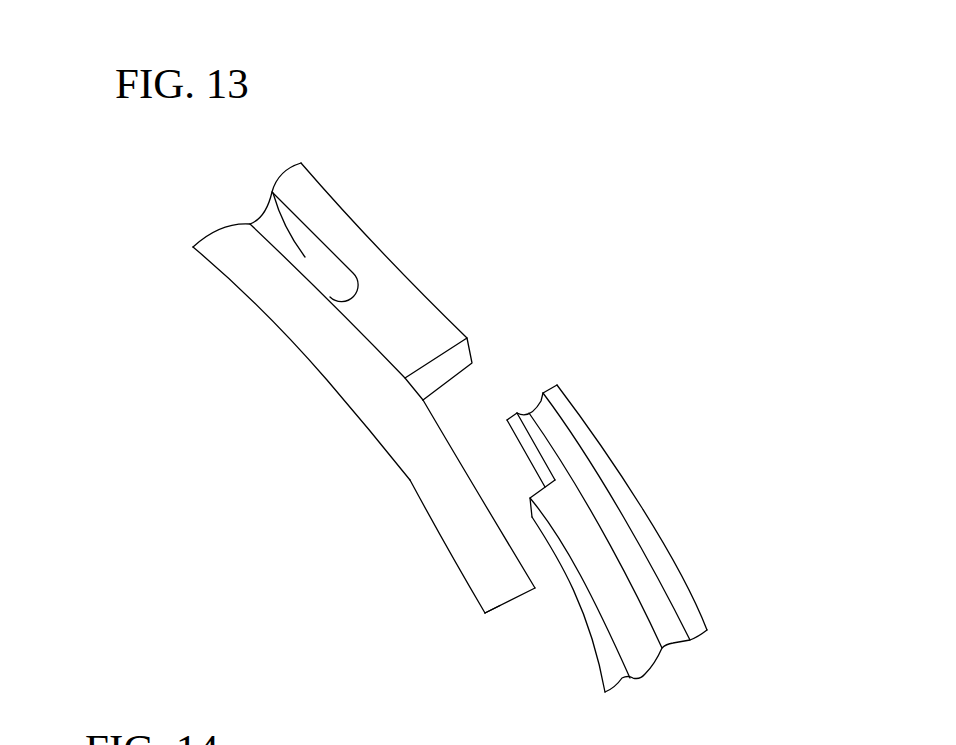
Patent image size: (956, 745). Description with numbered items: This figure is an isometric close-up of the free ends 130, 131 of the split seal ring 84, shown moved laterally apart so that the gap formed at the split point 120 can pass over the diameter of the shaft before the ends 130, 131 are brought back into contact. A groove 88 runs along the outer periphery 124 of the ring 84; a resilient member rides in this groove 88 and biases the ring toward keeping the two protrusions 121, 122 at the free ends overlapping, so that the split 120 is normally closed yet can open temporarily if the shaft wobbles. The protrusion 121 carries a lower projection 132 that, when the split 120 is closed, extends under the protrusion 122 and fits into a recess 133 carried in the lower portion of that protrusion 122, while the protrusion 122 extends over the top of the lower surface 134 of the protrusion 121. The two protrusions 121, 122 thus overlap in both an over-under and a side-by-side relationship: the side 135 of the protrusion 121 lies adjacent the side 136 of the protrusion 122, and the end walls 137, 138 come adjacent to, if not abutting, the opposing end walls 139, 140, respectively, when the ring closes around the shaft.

The ring 84 is at (703, 274).
The groove 88 is at (265, 207).
The split point 120 is at (480, 403).
The protrusion 121 is at (403, 477).
The protrusion 122 is at (587, 422).
The outer periphery 124 is at (305, 302).
The free end 130 is at (370, 586).
The free end 131 is at (738, 514).
The lower projection 132 is at (470, 557).
The recess 133 is at (565, 587).
The lower surface 134 is at (428, 338).
The side 135 is at (447, 428).
The side 136 is at (537, 534).
The end wall 137 is at (492, 613).
The end wall 138 is at (543, 391).
The opposing end wall 139 is at (578, 622).
The opposing end wall 140 is at (378, 268).